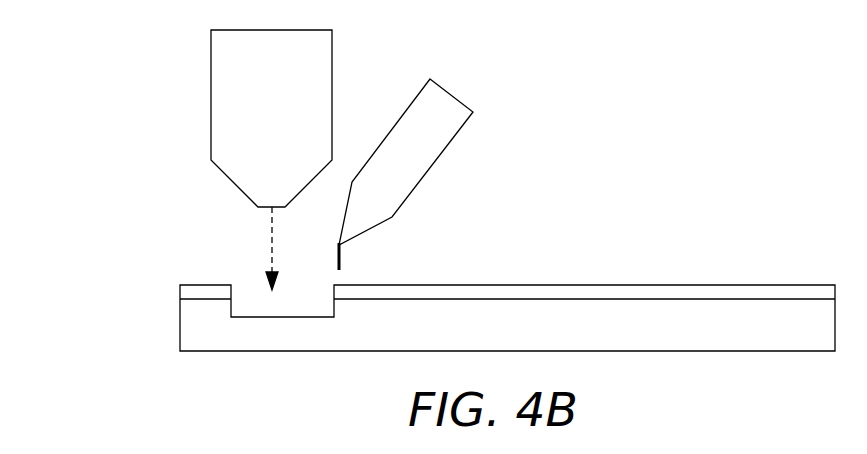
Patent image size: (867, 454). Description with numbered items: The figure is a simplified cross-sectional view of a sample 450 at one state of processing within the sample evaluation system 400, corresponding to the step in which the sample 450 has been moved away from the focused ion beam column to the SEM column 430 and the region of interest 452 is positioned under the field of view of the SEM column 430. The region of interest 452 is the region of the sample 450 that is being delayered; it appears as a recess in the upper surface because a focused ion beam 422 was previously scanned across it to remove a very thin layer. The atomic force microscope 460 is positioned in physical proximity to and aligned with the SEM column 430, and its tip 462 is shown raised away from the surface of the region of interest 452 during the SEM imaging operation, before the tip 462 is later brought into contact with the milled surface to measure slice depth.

The sample evaluation system 400 is at (145, 80).
The SEM column 430 is at (332, 78).
The focused ion beam 422 is at (270, 232).
The sample 450 is at (823, 340).
The region of interest 452 is at (266, 316).
The atomic force microscope 460 is at (465, 100).
The tip 462 is at (340, 254).